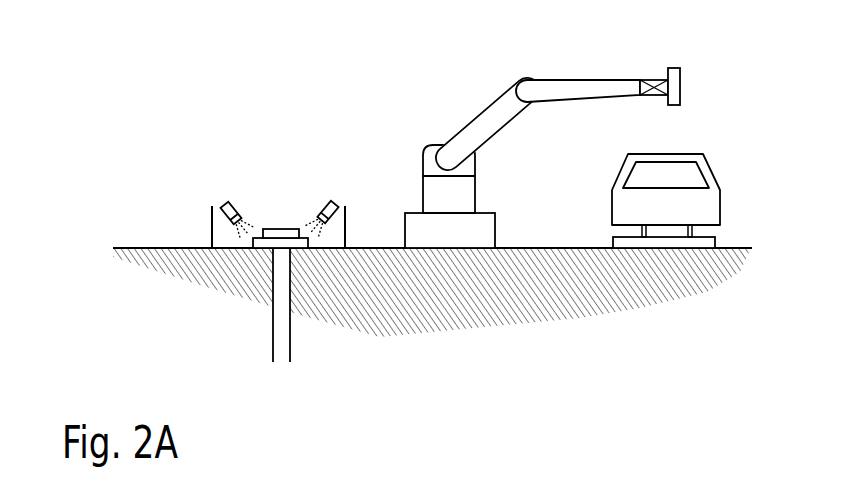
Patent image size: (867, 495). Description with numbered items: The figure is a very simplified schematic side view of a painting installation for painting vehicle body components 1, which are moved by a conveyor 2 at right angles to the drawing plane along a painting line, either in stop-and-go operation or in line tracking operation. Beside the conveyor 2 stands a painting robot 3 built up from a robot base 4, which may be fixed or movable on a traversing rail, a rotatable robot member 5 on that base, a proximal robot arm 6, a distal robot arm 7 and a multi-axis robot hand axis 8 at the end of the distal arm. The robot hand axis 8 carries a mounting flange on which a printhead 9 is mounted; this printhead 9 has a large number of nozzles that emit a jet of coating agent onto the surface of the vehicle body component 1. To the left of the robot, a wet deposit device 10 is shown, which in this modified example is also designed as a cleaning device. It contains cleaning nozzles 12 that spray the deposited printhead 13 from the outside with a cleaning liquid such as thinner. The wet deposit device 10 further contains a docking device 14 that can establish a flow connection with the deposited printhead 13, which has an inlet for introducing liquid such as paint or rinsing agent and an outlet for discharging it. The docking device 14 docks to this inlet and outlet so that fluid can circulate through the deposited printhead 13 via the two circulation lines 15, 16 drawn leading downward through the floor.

The vehicle body component 1 is at (722, 202).
The conveyor 2 is at (613, 238).
The painting robot 3 is at (546, 138).
The robot base 4 is at (423, 237).
The rotatable robot member 5 is at (465, 195).
The proximal robot arm 6 is at (493, 118).
The distal robot arm 7 is at (595, 90).
The robot hand axis 8 is at (653, 83).
The printhead 9 is at (682, 80).
The wet deposit device 10 is at (197, 222).
The cleaning nozzles 12 is at (328, 203).
The deposited printhead 13 is at (272, 229).
The docking device 14 is at (255, 234).
The circulation line 15 is at (292, 353).
The circulation line 16 is at (270, 358).